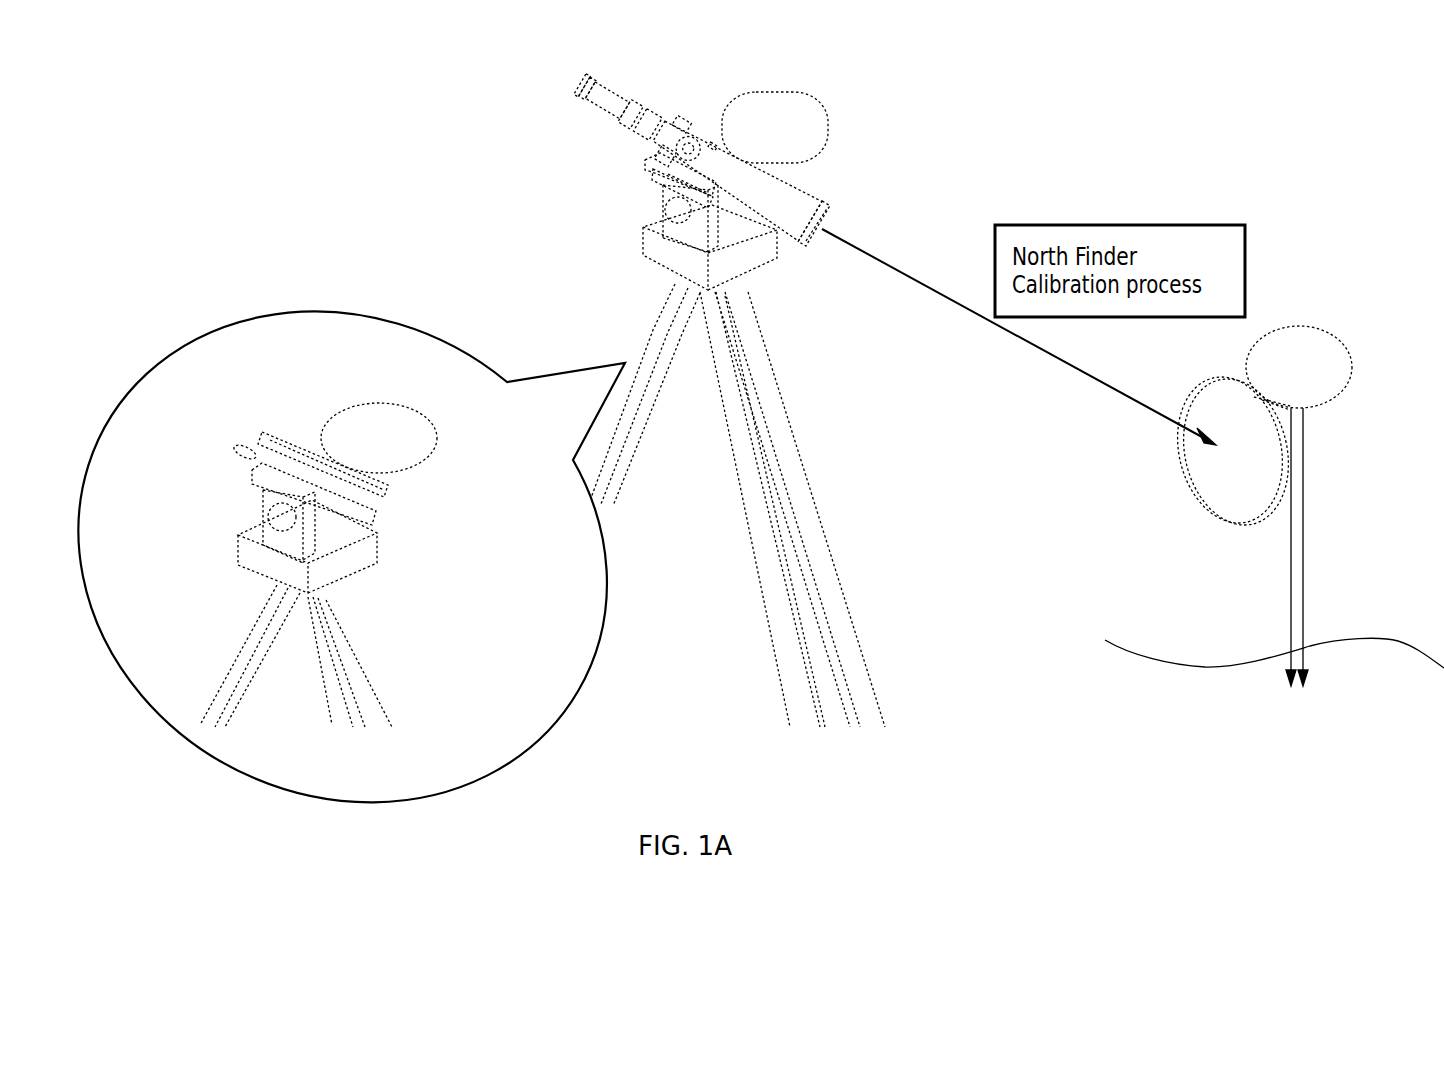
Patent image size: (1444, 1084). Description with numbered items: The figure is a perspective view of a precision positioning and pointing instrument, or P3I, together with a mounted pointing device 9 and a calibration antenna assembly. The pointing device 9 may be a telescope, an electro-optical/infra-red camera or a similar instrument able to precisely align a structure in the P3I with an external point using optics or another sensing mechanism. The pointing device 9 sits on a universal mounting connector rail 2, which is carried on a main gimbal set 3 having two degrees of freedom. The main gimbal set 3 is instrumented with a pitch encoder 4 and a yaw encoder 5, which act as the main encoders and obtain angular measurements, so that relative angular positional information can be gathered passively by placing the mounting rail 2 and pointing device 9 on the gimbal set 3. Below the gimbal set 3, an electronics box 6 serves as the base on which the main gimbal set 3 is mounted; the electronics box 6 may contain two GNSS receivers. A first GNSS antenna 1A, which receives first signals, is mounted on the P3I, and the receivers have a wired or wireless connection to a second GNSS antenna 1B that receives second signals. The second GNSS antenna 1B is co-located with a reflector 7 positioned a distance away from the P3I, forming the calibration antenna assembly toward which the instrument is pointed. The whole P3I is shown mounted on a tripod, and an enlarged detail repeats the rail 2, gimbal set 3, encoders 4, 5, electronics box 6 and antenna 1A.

The first Global Navigation Satellite Systems (GNSS) antenna 1A is at (835, 133).
The second GNSS antenna 1B is at (1328, 330).
The universal mounting connector rail 2 is at (652, 178).
The main gimbal set 3 is at (723, 212).
The pitch encoder 4 is at (665, 214).
The yaw encoder 5 is at (727, 242).
The electronics box 6 is at (667, 263).
The reflector 7 is at (1198, 487).
The pointing device 9 is at (815, 195).